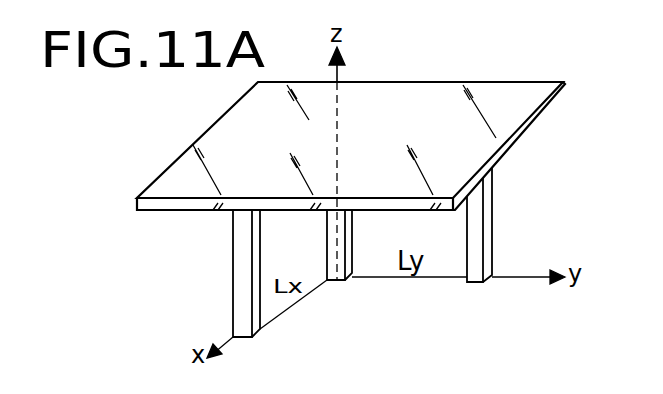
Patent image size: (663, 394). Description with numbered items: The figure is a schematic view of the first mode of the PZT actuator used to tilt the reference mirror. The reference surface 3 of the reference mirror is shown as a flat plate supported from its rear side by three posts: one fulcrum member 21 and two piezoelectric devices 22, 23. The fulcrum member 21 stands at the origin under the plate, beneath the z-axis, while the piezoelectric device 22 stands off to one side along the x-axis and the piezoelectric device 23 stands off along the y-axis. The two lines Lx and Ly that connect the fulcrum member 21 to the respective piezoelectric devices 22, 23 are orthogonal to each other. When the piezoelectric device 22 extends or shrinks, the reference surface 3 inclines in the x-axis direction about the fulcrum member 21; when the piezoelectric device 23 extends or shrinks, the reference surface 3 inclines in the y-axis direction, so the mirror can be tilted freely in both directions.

The reference surface 3 is at (503, 88).
The fulcrum member 21 is at (343, 282).
The piezoelectric device 22 is at (261, 335).
The piezoelectric device 23 is at (488, 228).